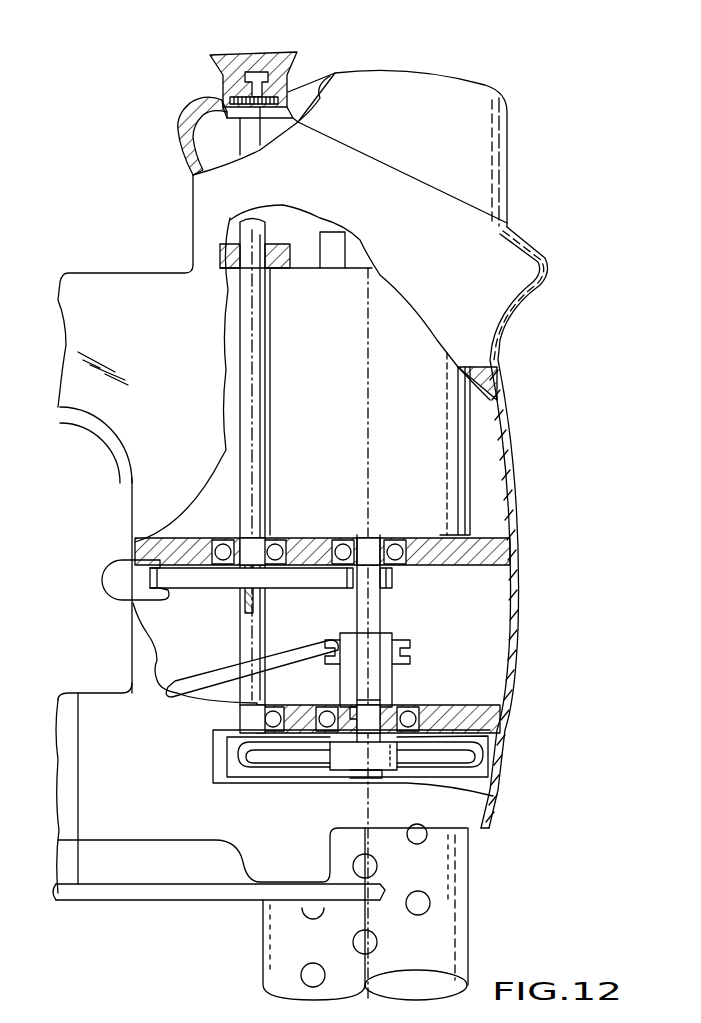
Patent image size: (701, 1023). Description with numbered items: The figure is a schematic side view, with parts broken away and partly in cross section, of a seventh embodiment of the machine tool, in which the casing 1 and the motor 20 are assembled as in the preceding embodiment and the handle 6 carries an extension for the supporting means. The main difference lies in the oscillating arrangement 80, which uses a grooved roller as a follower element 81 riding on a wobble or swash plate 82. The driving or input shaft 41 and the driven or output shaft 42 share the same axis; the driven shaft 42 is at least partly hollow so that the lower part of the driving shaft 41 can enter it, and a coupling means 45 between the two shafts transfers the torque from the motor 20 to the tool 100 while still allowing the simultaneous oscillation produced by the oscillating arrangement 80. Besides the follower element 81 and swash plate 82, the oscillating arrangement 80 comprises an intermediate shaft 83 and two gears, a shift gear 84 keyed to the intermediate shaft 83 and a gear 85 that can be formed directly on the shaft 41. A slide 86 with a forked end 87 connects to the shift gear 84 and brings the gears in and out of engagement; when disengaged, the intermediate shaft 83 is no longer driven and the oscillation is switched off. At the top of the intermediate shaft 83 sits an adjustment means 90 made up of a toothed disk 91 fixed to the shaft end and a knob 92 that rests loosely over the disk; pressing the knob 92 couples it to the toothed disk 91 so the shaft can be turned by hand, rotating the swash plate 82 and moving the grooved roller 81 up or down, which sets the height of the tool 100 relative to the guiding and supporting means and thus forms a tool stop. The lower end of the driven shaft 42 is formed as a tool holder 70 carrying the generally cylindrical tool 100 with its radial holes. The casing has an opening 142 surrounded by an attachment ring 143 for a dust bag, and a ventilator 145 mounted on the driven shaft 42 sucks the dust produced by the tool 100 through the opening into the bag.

The casing 1 is at (532, 462).
The handle 6 is at (120, 312).
The motor 20 is at (427, 392).
The driving shaft 41 is at (372, 530).
The driven shaft 42 is at (390, 705).
The coupling means 45 is at (365, 692).
The tool holder 70 is at (188, 908).
The oscillating arrangement 80 is at (462, 660).
The follower element 81 is at (410, 641).
The swash plate 82 is at (192, 684).
The intermediate shaft 83 is at (253, 366).
The shift gear 84 is at (188, 580).
The gear 85 is at (395, 580).
The slide 86 is at (122, 577).
The forked end 87 is at (168, 596).
The adjustment means 90 is at (183, 70).
The toothed disk 91 is at (178, 134).
The knob 92 is at (290, 51).
The tool 100 is at (460, 912).
The opening 142 is at (493, 796).
The attachment ring 143 is at (215, 749).
The ventilator 145 is at (472, 756).